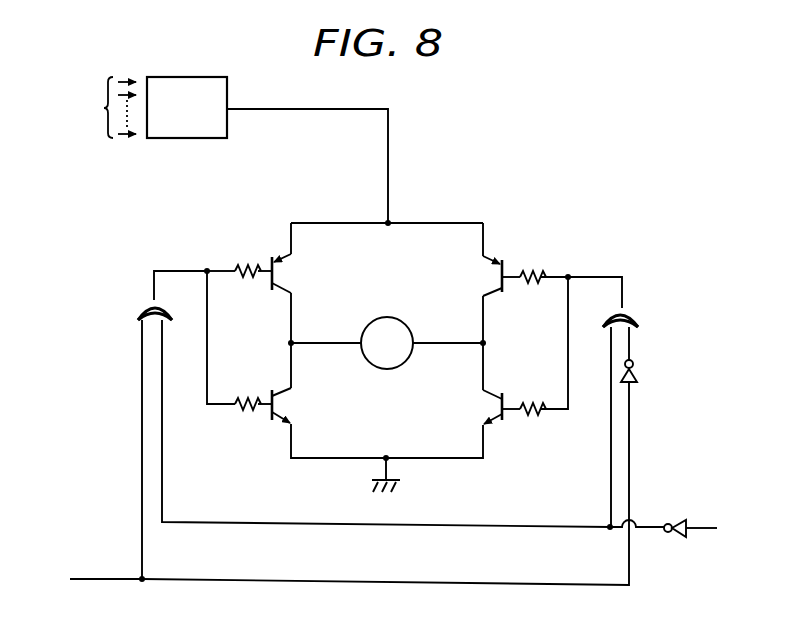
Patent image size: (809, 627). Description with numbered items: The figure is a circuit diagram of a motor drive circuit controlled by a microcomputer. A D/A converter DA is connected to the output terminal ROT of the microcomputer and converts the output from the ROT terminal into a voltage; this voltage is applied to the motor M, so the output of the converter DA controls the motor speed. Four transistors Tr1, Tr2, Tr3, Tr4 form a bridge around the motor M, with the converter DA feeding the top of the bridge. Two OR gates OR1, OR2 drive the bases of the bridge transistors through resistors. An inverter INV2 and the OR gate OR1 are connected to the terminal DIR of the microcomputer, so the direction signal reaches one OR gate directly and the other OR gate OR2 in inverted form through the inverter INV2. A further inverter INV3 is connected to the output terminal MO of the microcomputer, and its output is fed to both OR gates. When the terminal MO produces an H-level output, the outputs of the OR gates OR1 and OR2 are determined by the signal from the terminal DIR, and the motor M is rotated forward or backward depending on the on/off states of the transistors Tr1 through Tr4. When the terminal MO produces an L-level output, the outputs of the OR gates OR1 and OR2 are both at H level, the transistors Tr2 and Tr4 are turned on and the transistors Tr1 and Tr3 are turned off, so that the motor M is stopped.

The output terminal ROT is at (100, 107).
The D/A converter DA is at (187, 107).
The transistor Tr1 is at (270, 260).
The transistor Tr2 is at (270, 417).
The transistor Tr3 is at (504, 272).
The transistor Tr4 is at (504, 421).
The motor M is at (387, 343).
The OR gate OR1 is at (136, 315).
The OR gate OR2 is at (638, 320).
The inverter INV2 is at (637, 378).
The inverter INV3 is at (683, 518).
The output terminal MO is at (719, 533).
The terminal DIR is at (87, 580).